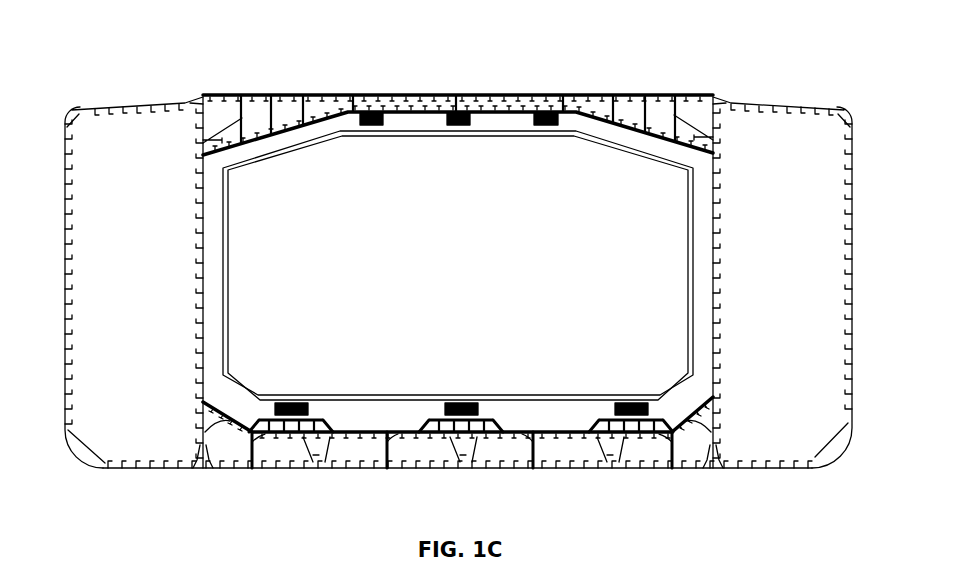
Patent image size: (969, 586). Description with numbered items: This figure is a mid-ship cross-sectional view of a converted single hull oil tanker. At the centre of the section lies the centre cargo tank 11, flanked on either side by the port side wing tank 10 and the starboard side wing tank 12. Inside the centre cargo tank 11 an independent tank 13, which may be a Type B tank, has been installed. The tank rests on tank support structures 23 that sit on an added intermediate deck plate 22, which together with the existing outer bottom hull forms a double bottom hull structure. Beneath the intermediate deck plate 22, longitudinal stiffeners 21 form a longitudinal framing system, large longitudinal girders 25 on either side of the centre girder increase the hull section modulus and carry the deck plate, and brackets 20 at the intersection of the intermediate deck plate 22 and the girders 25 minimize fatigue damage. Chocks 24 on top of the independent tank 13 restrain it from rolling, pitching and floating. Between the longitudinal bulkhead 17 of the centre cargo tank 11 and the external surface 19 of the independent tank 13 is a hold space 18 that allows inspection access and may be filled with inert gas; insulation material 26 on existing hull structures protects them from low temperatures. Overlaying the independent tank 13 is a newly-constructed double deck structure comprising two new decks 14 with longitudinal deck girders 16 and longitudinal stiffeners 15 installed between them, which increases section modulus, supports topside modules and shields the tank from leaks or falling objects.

The port side wing tank 10 is at (134, 282).
The centre cargo tank 11 is at (453, 265).
The starboard side wing tank 12 is at (782, 282).
The independent tank 13 is at (320, 136).
The new decks 14 is at (428, 92).
The longitudinal stiffeners 15 is at (550, 90).
The longitudinal deck girders 16 is at (642, 94).
The longitudinal bulkhead 17 is at (202, 273).
The hold space 18 is at (214, 244).
The external surface 19 is at (227, 281).
The brackets 20 is at (240, 434).
The longitudinal stiffeners 21 is at (328, 433).
The intermediate deck plate 22 is at (373, 433).
The tank support structures 23 is at (493, 425).
The chocks 24 is at (385, 126).
The large longitudinal girders 25 is at (253, 469).
The insulation material 26 is at (545, 426).